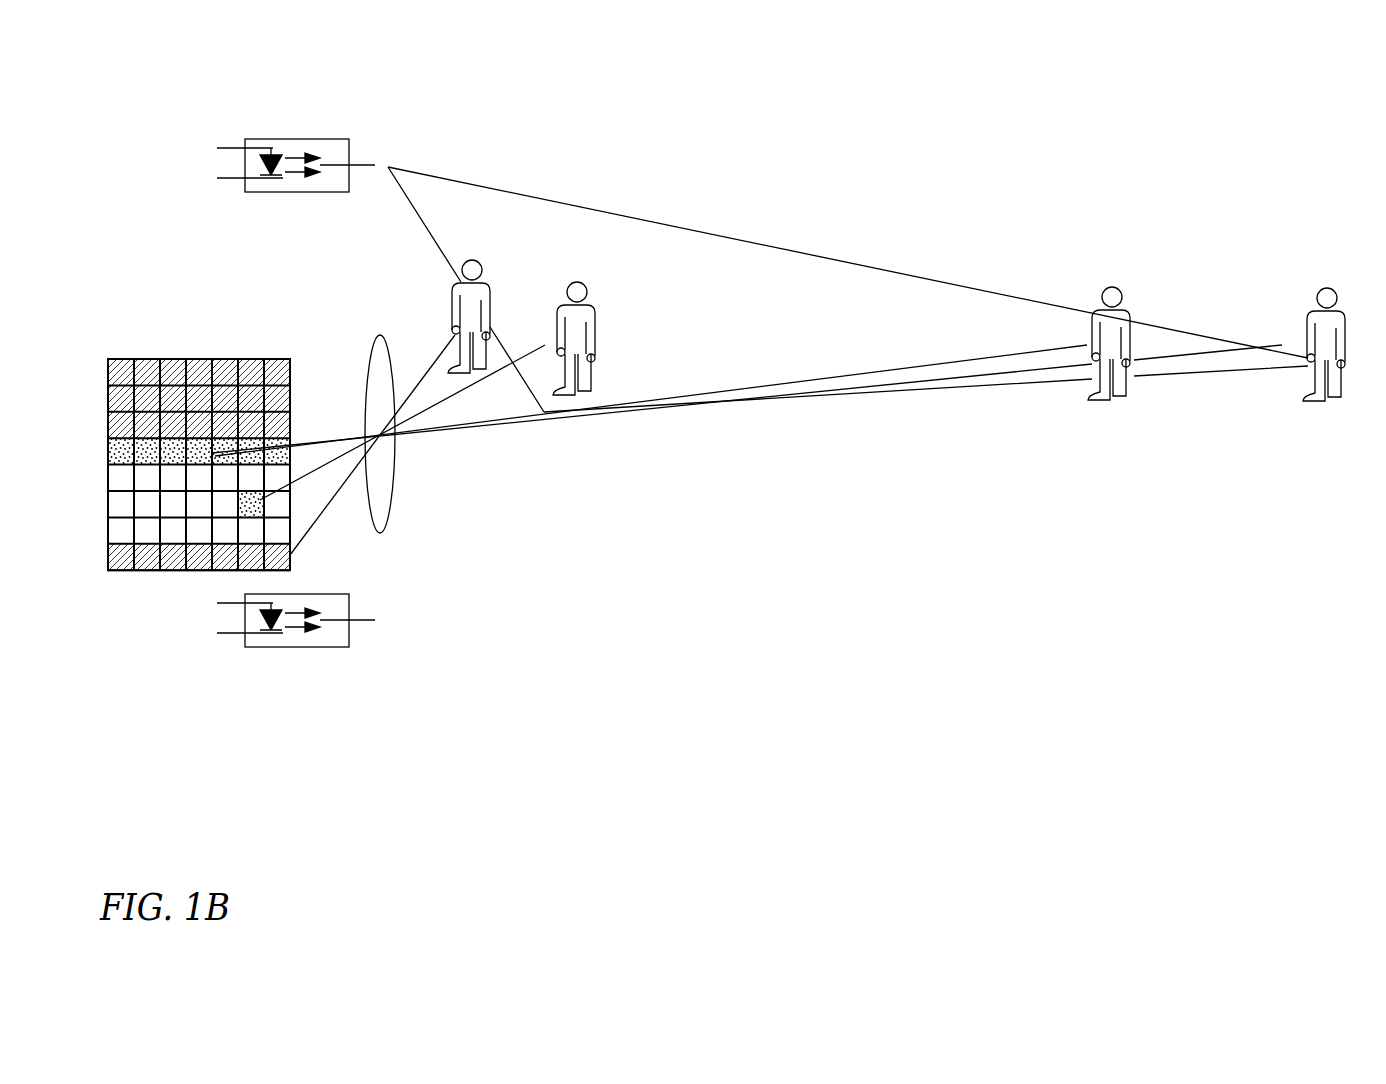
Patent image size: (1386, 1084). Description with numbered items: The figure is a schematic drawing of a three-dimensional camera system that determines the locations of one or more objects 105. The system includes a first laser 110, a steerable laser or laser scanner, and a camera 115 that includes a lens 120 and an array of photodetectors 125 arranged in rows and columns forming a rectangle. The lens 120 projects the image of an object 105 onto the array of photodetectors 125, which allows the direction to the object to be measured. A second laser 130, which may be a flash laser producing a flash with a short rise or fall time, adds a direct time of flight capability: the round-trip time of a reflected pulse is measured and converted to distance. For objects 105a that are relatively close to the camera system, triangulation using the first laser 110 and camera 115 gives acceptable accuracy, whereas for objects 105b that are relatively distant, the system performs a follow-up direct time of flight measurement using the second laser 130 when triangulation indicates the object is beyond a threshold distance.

The object 105 is at (1095, 377).
The relatively close objects 105a is at (618, 462).
The relatively distant objects 105b is at (1215, 436).
The first laser 110 is at (268, 139).
The camera 115 is at (392, 335).
The lens 120 is at (365, 393).
The array of photodetectors 125 is at (143, 570).
The second laser 130 is at (349, 633).